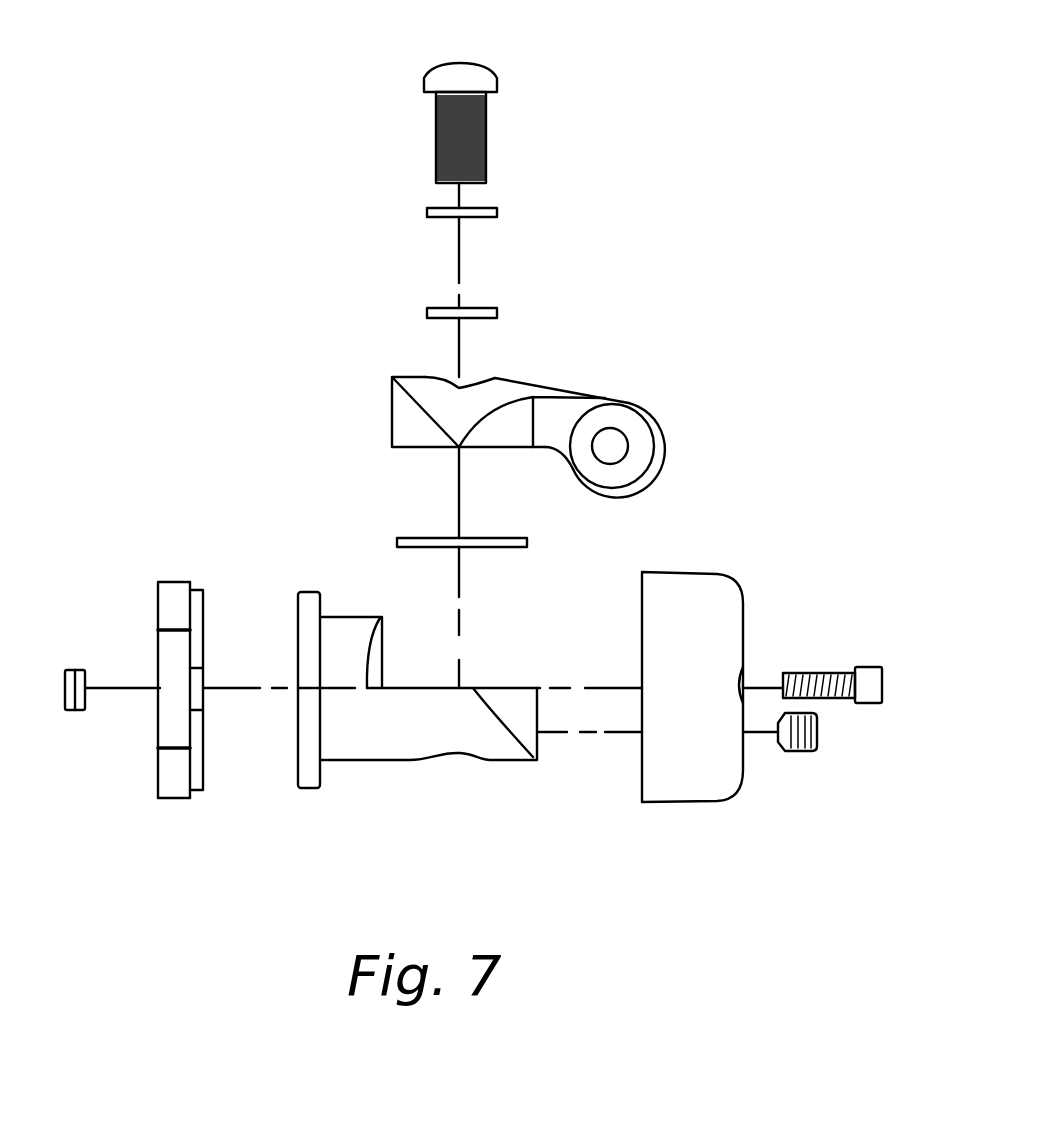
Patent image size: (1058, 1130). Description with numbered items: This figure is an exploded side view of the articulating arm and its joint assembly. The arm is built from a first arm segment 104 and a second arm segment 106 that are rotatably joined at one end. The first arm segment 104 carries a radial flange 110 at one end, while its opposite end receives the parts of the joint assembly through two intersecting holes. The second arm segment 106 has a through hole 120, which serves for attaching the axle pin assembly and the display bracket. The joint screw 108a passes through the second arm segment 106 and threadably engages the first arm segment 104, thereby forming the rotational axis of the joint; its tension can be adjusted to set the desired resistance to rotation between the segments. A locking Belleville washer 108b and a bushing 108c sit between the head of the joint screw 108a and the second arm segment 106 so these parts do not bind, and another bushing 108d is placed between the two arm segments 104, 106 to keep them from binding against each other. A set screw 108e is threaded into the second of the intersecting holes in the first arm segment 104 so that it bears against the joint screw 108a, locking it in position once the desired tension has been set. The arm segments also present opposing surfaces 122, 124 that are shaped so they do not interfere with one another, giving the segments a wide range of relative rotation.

The first arm segment 104 is at (470, 717).
The second arm segment 106 is at (513, 420).
The joint screw 108a is at (482, 65).
The locking Belleville washer 108b is at (498, 212).
The bushing 108c is at (498, 310).
The bushing 108d is at (530, 543).
The set screw 108e is at (797, 752).
The radial flange 110 is at (310, 590).
The through hole 120 is at (620, 446).
The opposing surface 122 is at (377, 647).
The opposing surface 124 is at (403, 422).